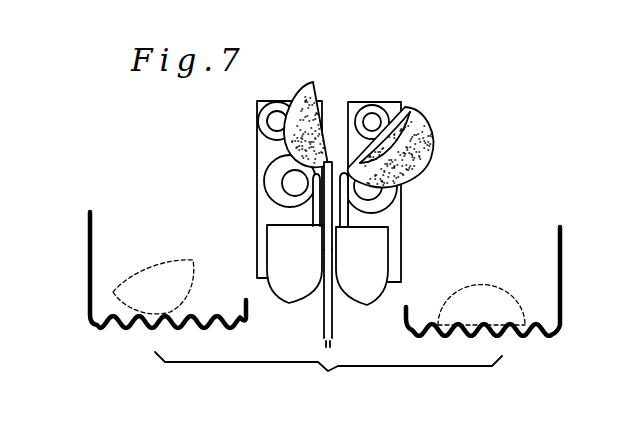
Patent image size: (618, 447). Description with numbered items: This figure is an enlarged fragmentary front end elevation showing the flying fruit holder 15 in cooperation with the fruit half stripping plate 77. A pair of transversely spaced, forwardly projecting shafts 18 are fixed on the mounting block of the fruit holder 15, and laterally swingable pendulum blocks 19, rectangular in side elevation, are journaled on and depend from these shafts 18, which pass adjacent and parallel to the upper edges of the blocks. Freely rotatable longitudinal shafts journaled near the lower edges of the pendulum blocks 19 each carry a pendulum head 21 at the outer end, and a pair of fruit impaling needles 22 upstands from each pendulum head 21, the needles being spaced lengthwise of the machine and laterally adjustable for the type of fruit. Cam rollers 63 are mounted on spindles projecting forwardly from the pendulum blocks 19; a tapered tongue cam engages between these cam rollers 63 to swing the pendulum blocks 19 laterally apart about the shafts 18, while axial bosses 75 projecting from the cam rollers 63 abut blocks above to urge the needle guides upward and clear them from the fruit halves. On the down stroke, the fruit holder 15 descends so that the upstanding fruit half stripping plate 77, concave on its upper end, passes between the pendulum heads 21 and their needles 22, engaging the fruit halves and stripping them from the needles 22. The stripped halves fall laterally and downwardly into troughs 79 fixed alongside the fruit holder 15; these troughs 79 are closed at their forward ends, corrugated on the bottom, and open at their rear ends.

The flying fruit holder 15 is at (257, 201).
The shafts 18 is at (270, 118).
The pendulum blocks 19 is at (268, 205).
The pendulum head 21 is at (355, 279).
The fruit impaling needles 22 is at (320, 190).
The cam rollers 63 is at (283, 170).
The axial bosses 75 is at (268, 163).
The fruit half stripping plate 77 is at (333, 245).
The troughs 79 is at (124, 328).